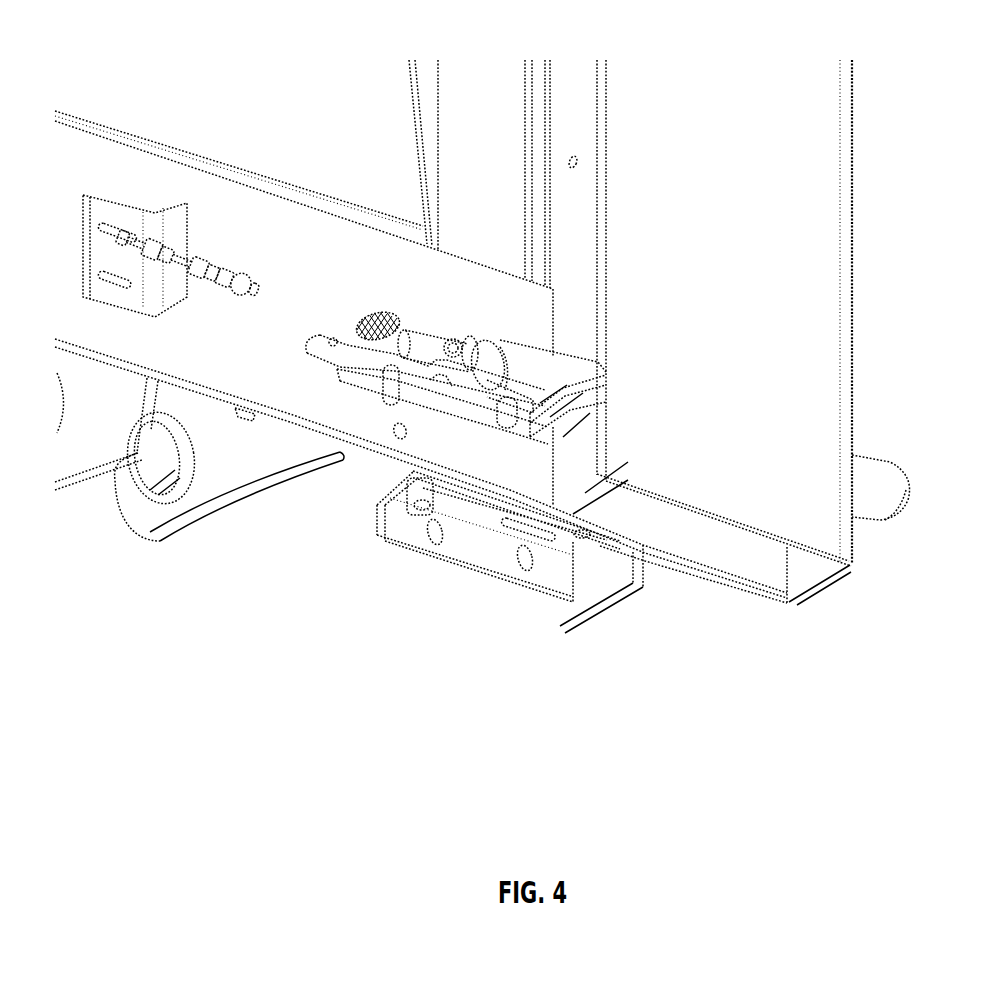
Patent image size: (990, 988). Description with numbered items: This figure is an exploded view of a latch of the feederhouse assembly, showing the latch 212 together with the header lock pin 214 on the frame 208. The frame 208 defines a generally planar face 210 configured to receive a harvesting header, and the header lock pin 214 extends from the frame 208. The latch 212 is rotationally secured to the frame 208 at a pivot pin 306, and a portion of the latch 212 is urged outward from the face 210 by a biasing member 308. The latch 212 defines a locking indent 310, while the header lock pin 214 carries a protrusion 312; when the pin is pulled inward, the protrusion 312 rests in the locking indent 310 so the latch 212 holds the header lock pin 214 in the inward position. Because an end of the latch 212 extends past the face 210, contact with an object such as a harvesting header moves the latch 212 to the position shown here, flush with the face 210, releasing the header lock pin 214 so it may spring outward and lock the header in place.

The frame 208 is at (853, 176).
The face 210 is at (773, 306).
The latch 212 is at (563, 423).
The header lock pin 214 is at (870, 523).
The pivot pin 306 is at (393, 378).
The biasing member 308 is at (368, 312).
The locking indent 310 is at (420, 387).
The protrusion 312 is at (503, 423).